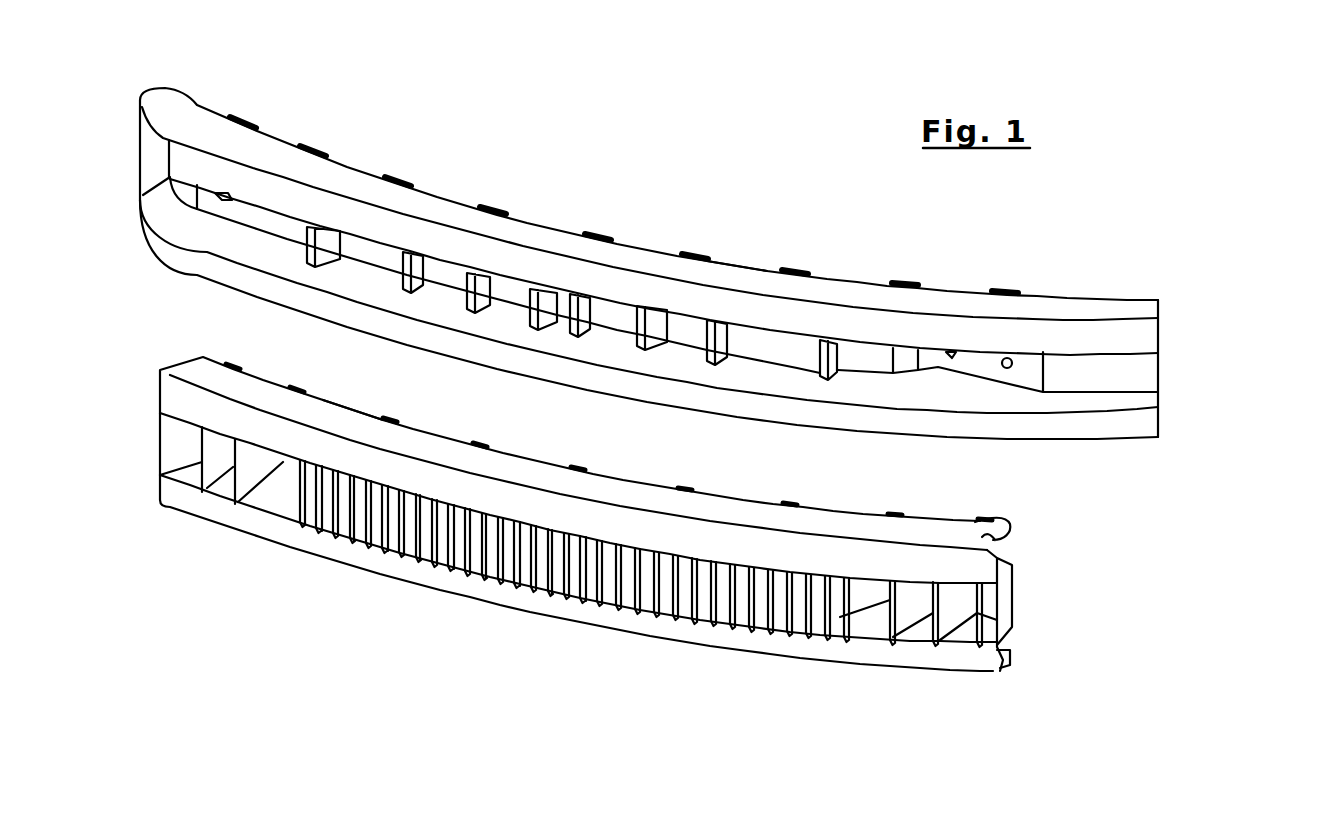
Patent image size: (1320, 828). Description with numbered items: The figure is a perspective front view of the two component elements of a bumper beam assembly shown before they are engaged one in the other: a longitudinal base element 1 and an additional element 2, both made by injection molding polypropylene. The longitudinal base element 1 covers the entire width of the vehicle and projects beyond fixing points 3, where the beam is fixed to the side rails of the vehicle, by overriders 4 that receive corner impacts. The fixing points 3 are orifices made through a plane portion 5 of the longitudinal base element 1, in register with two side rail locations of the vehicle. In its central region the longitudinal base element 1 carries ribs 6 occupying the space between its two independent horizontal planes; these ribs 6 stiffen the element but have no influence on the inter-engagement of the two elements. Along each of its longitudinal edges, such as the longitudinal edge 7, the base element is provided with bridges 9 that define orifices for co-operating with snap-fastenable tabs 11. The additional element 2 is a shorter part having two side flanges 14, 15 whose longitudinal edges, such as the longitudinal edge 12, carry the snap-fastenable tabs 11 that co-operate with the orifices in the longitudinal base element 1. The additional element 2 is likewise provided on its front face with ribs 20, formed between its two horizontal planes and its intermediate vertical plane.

The longitudinal base element 1 is at (649, 263).
The additional element 2 is at (737, 535).
The fixing points 3 is at (228, 203).
The overriders 4 is at (172, 118).
The plane portion 5 is at (251, 216).
The ribs 6 is at (531, 290).
The longitudinal edge 7 is at (739, 263).
The bridges 9 is at (245, 116).
The snap-fastenable tabs 11 is at (235, 363).
The longitudinal edge 12 is at (348, 406).
The side flange 14 is at (1012, 536).
The side flange 15 is at (1010, 664).
The ribs 20 is at (534, 578).